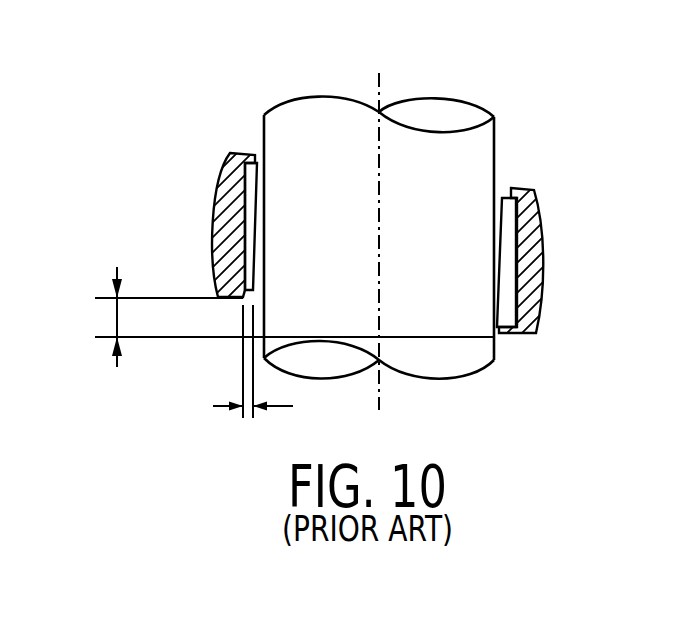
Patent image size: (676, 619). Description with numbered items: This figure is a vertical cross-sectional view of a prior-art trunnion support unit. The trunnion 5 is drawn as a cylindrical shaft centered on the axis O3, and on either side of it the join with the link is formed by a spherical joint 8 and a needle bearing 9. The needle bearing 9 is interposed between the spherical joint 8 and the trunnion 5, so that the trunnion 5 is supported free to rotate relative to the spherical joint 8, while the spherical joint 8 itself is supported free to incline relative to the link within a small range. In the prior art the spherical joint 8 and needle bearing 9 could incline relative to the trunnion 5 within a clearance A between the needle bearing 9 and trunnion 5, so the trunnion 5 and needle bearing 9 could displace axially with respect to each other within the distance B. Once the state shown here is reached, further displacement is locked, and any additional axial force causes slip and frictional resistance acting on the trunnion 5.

The trunnion 5 is at (305, 97).
The spherical joint 8 is at (233, 152).
The needle bearing 9 is at (241, 224).
The axis O3 is at (381, 91).
The clearance A is at (253, 379).
The distance B is at (285, 317).